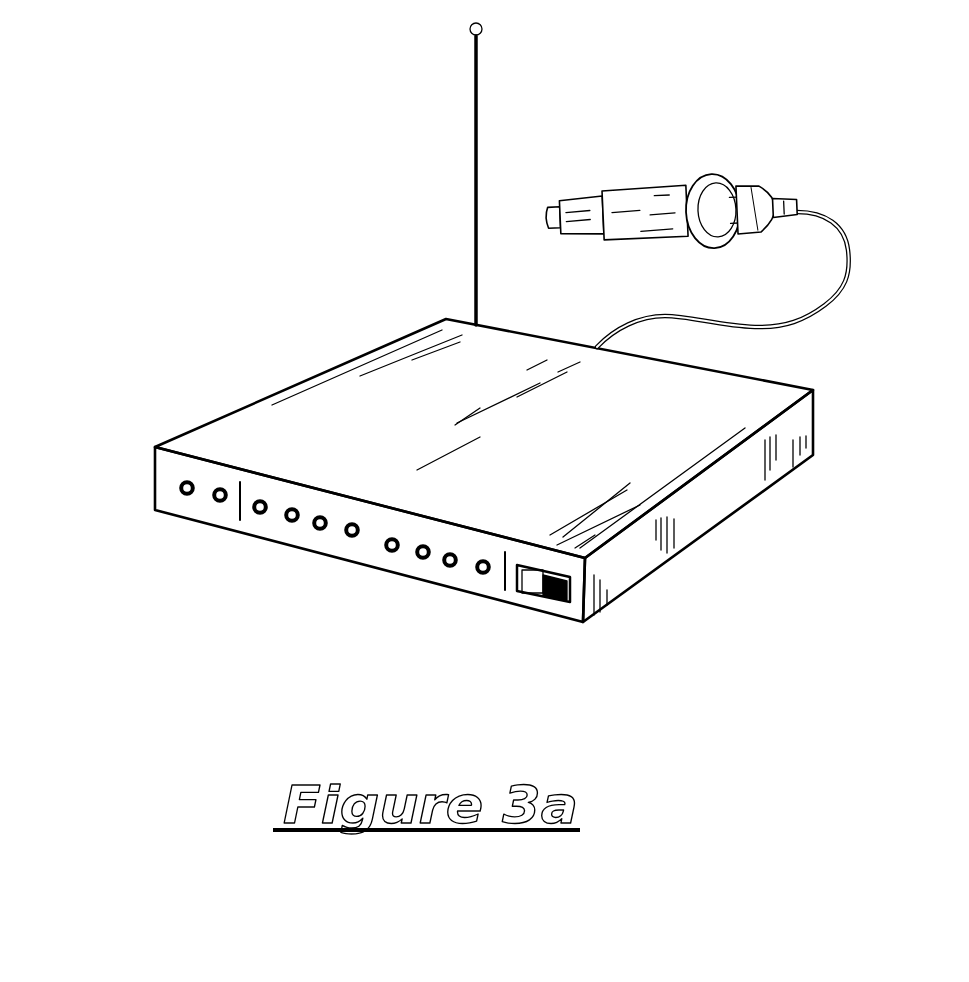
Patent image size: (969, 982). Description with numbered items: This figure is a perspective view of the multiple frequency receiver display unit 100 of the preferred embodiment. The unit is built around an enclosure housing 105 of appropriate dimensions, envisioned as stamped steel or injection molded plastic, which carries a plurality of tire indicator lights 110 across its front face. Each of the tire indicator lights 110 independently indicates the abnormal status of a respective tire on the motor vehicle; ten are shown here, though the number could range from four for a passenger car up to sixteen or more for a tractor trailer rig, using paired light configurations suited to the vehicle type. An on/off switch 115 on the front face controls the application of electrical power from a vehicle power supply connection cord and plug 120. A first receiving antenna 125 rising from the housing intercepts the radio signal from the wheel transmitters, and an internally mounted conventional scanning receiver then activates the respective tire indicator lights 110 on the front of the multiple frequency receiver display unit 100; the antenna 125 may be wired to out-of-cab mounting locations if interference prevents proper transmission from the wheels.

The multiple frequency receiver display unit 100 is at (433, 366).
The enclosure housing 105 is at (312, 428).
The tire indicator lights 110 is at (220, 502).
The on/off switch 115 is at (552, 598).
The vehicle power supply connection cord and plug 120 is at (652, 188).
The first receiving antenna 125 is at (475, 175).